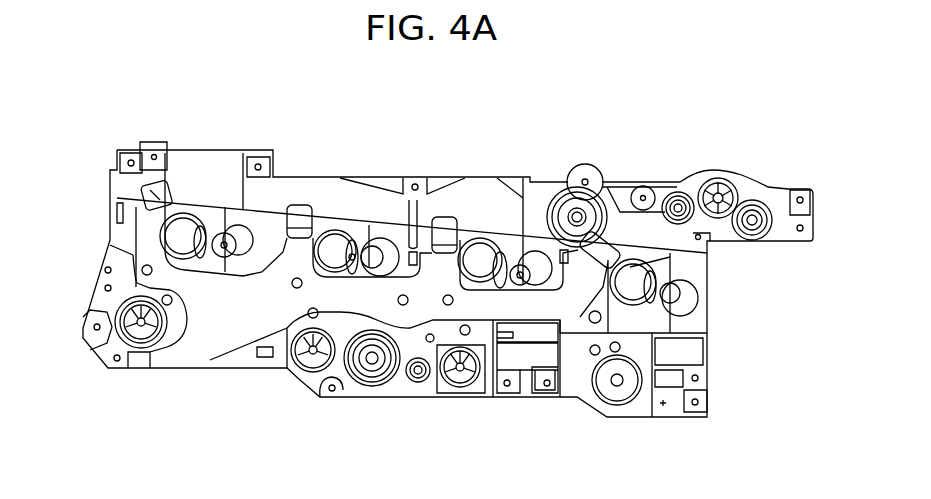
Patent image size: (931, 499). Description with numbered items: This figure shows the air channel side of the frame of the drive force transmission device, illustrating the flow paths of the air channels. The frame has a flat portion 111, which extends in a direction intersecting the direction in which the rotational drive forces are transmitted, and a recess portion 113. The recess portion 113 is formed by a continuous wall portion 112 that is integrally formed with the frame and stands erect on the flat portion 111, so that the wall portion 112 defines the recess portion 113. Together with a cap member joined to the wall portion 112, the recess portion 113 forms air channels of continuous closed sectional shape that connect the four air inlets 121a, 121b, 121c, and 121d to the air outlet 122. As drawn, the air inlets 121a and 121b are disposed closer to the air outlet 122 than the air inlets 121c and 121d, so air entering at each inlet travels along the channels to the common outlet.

The flat portion 111 is at (623, 315).
The wall portion 112 is at (108, 270).
The recess portion 113 is at (308, 365).
The air inlet 121a is at (155, 185).
The air inlet 121b is at (296, 212).
The air inlet 121c is at (452, 223).
The air inlet 121d is at (632, 240).
The air outlet 122 is at (177, 372).